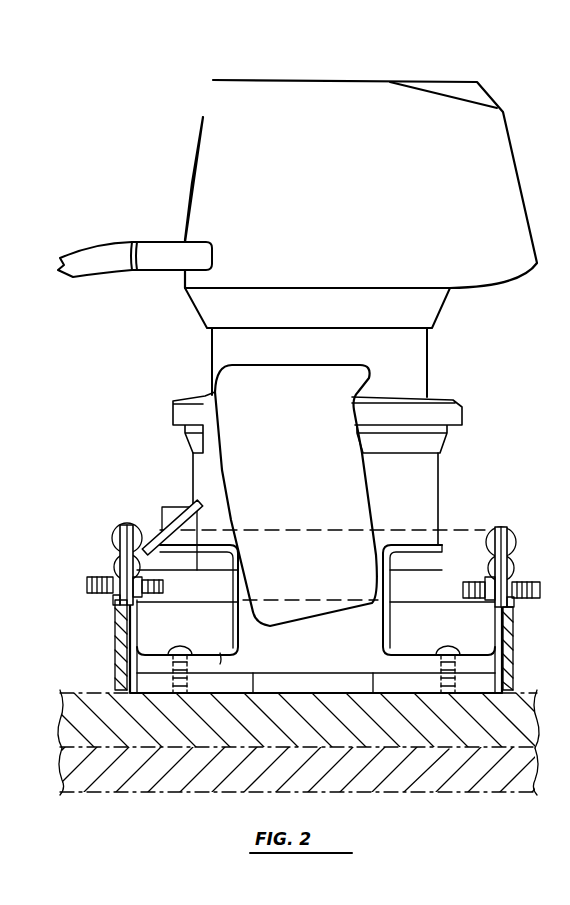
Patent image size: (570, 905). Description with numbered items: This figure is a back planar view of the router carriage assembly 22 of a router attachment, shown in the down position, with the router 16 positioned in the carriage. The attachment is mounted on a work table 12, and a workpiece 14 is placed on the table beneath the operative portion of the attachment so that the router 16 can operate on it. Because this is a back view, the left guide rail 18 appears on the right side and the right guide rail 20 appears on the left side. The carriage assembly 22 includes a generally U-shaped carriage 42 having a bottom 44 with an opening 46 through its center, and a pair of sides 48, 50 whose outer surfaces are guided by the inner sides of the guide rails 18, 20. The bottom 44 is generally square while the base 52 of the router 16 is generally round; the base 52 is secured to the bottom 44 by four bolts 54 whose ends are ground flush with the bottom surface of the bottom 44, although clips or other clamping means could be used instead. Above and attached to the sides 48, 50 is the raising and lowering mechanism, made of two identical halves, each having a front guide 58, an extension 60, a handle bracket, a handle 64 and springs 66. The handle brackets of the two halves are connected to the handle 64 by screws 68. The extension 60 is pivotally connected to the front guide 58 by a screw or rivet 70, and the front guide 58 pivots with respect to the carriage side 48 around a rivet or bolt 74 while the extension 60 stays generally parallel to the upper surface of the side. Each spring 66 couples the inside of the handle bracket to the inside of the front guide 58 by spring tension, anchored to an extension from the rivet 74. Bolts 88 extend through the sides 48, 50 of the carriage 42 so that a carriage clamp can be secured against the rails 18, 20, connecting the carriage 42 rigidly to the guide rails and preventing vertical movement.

The work table 12 is at (533, 768).
The workpiece 14 is at (535, 723).
The router 16 is at (347, 97).
The left guide rail 18 is at (512, 640).
The right guide rail 20 is at (113, 643).
The router carriage assembly 22 is at (475, 512).
The carriage 42 is at (142, 612).
The bottom 44 is at (255, 695).
The opening 46 is at (373, 683).
The side 48 is at (494, 622).
The side 50 is at (137, 641).
The base 52 is at (221, 660).
The bolts 54 is at (178, 650).
The front guide 58 is at (123, 524).
The extension 60 is at (133, 527).
The handle 64 is at (453, 542).
The springs 66 is at (161, 586).
The screw 68 is at (111, 563).
The screw or rivet 70 is at (111, 538).
The rivet or bolt 74 is at (116, 602).
The bolt 88 is at (95, 592).